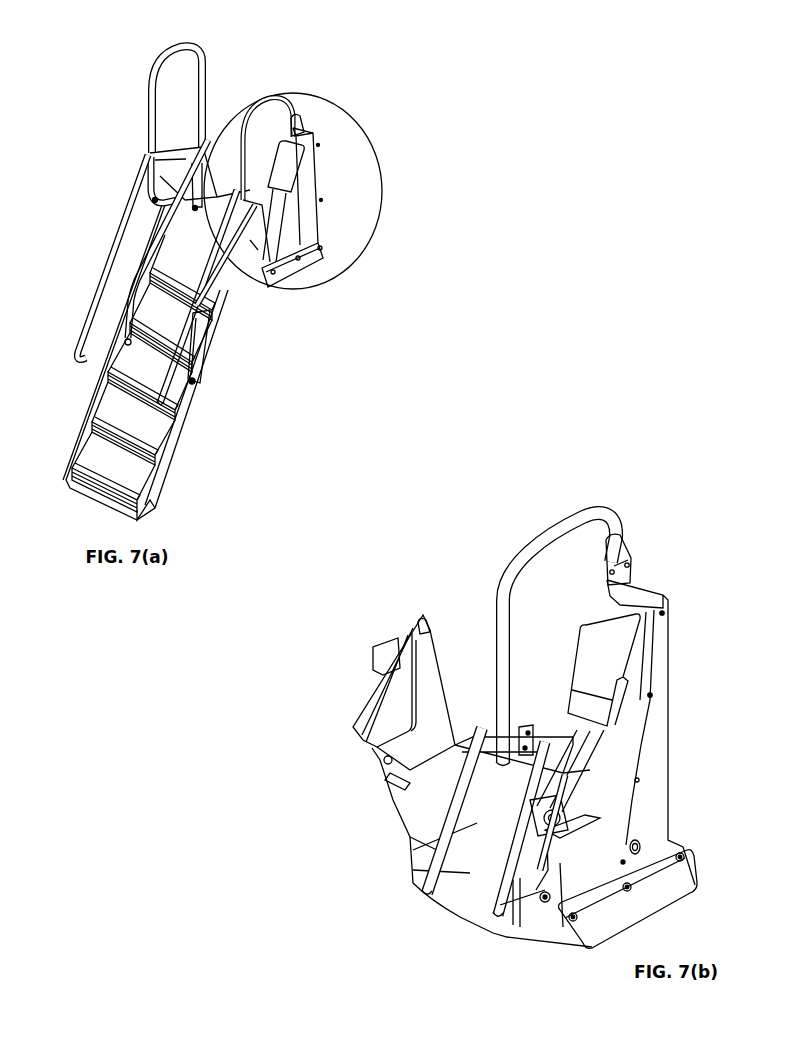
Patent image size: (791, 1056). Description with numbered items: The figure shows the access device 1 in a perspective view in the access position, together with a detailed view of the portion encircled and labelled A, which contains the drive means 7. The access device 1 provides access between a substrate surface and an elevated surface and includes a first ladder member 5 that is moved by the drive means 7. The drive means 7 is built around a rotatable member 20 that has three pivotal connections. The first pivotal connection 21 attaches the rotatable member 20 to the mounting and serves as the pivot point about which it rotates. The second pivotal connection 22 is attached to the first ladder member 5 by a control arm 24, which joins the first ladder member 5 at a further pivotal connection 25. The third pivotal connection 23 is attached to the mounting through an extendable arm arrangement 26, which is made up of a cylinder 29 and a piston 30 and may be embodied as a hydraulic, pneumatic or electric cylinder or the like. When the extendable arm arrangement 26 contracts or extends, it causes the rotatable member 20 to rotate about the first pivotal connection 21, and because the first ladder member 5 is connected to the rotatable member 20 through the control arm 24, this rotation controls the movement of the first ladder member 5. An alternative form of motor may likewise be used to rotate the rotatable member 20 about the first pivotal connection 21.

In FIG. 7A, the access device 1 is at (98, 108).
In FIG. 7A, the drive means 7 is at (337, 103).
In FIG. 7B, the drive means 7 is at (552, 750).
In FIG. 7B, the extendable arm arrangement 26 is at (630, 688).
In FIG. 7B, the cylinder 29 is at (605, 738).
In FIG. 7B, the second pivotal connection 22 is at (573, 803).
In FIG. 7B, the piston 30 is at (597, 810).
In FIG. 7B, the first pivotal connection 21 is at (640, 843).
In FIG. 7B, the third pivotal connection 23 is at (520, 877).
In FIG. 7B, the rotatable member 20 is at (530, 840).
In FIG. 7B, the control arm 24 is at (533, 858).
In FIG. 7B, the first ladder member 5 is at (520, 927).
In FIG. 7B, the pivotal connection 25 is at (545, 903).